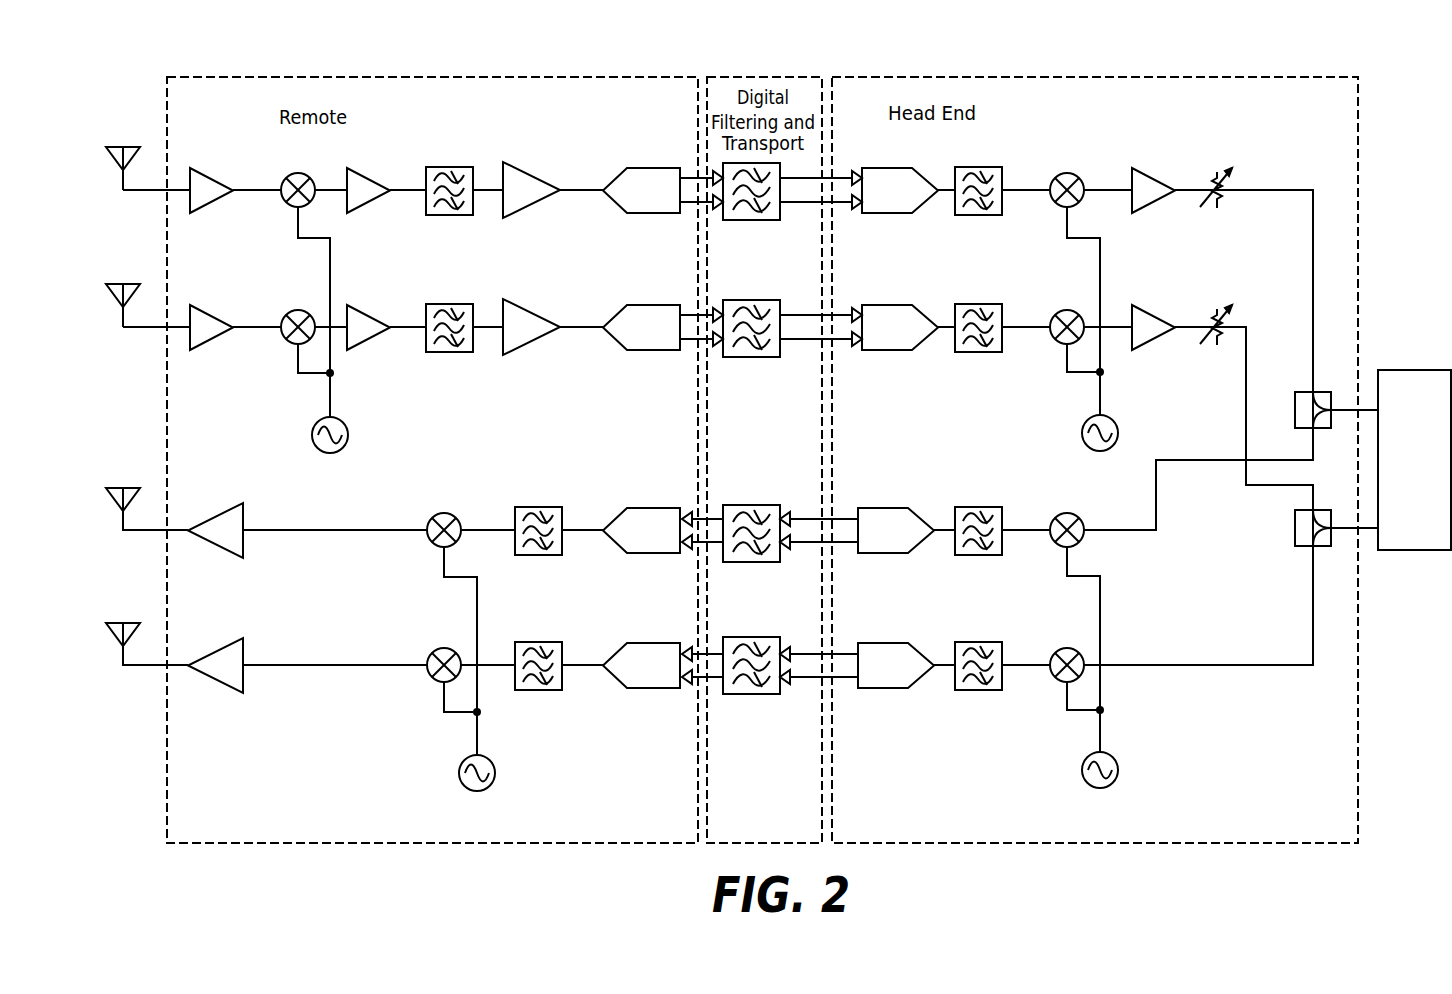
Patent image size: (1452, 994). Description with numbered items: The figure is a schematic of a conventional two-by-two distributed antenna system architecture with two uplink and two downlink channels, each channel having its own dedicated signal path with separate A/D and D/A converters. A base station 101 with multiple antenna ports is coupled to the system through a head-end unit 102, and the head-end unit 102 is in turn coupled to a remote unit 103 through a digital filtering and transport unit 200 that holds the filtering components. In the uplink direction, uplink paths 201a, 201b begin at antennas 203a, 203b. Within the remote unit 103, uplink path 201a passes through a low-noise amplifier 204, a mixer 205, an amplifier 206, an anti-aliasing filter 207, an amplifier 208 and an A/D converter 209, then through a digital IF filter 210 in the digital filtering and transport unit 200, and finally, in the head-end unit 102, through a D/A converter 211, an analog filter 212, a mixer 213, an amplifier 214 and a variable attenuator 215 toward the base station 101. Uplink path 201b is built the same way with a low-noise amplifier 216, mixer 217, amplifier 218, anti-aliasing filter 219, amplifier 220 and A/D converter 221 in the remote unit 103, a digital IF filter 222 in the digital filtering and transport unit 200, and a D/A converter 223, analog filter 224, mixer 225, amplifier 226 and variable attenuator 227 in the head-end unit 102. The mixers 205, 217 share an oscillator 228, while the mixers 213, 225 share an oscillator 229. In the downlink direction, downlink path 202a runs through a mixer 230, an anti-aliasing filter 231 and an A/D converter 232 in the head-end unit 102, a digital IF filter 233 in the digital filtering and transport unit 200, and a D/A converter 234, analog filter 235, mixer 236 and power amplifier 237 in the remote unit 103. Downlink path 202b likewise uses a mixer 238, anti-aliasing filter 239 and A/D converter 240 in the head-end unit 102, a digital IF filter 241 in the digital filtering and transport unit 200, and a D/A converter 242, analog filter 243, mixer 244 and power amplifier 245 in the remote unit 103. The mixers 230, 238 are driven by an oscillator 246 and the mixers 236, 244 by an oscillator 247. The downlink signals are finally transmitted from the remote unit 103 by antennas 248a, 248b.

The base station 101 is at (1423, 370).
The head-end unit 102 is at (1080, 77).
The remote unit 103 is at (413, 77).
The digital filtering and transport unit 200 is at (757, 77).
The uplink path 201a is at (150, 190).
The uplink path 201b is at (150, 327).
The downlink path 202a is at (150, 530).
The downlink path 202b is at (150, 665).
The antenna 203a is at (141, 147).
The antenna 203b is at (141, 284).
The low-noise amplifier 204 is at (223, 168).
The mixer 205 is at (285, 181).
The amplifier 206 is at (375, 170).
The anti-aliasing filter 207 is at (457, 167).
The amplifier 208 is at (538, 163).
The A/D converter 209 is at (656, 168).
The digital intermediate frequency filter 210 is at (746, 221).
The D/A converter 211 is at (895, 168).
The analog filter 212 is at (990, 167).
The mixer 213 is at (1053, 182).
The amplifier 214 is at (1158, 168).
The variable attenuator 215 is at (1213, 183).
The low-noise amplifier 216 is at (223, 305).
The mixer 217 is at (285, 318).
The amplifier 218 is at (375, 307).
The anti-aliasing filter 219 is at (457, 304).
The amplifier 220 is at (538, 300).
The A/D converter 221 is at (656, 305).
The digital IF filter 222 is at (746, 358).
The D/A converter 223 is at (895, 305).
The analog filter 224 is at (990, 304).
The mixer 225 is at (1053, 319).
The amplifier 226 is at (1158, 305).
The variable attenuator 227 is at (1213, 320).
The oscillator 228 is at (348, 434).
The oscillator 229 is at (1118, 433).
The mixer 230 is at (1053, 522).
The anti-aliasing filter 231 is at (990, 507).
The A/D converter 232 is at (892, 508).
The digital IF filter 233 is at (741, 505).
The D/A converter 234 is at (656, 508).
The analog filter 235 is at (548, 507).
The mixer 236 is at (430, 522).
The power amplifier 237 is at (208, 503).
The mixer 238 is at (1053, 657).
The anti-aliasing filter 239 is at (990, 642).
The A/D converter 240 is at (892, 643).
The digital IF filter 241 is at (741, 637).
The D/A converter 242 is at (656, 643).
The analog filter 243 is at (548, 642).
The mixer 244 is at (430, 657).
The power amplifier 245 is at (208, 638).
The oscillator 246 is at (1118, 771).
The oscillator 247 is at (495, 773).
The antenna 248a is at (141, 488).
The antenna 248b is at (141, 623).